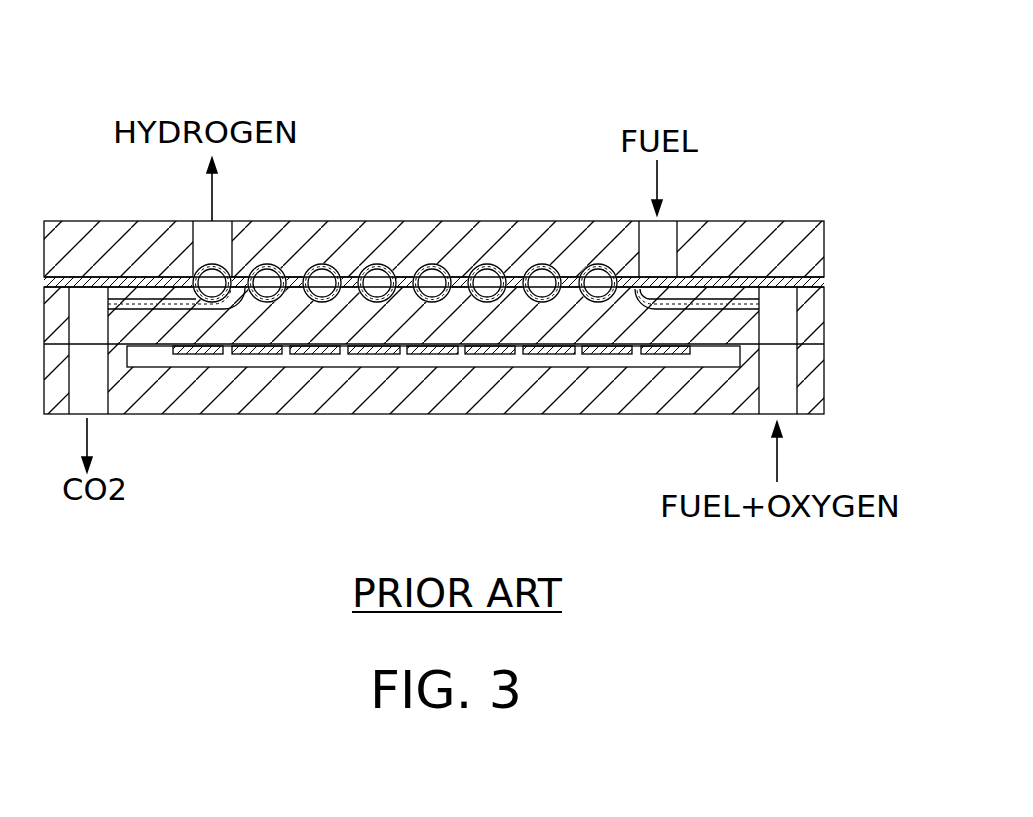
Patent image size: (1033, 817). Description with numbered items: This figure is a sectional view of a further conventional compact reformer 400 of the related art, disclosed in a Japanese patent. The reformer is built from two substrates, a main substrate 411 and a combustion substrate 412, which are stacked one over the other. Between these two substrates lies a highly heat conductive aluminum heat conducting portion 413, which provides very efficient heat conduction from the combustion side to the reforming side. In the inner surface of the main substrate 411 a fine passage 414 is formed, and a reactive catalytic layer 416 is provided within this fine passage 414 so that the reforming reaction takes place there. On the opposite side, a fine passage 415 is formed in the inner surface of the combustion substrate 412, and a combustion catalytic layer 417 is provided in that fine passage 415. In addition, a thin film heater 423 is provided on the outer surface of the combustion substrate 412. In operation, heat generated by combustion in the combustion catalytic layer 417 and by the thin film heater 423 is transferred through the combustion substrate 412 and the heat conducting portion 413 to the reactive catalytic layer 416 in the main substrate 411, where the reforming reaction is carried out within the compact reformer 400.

The compact reformer 400 is at (410, 176).
The main substrate 411 is at (815, 245).
The combustion substrate 412 is at (813, 313).
The heat conducting portion 413 is at (818, 284).
The fine passage 414 is at (485, 300).
The fine passage 415 is at (327, 300).
The reactive catalytic layer 416 is at (485, 300).
The combustion catalytic layer 417 is at (327, 300).
The thin film heater 423 is at (596, 354).